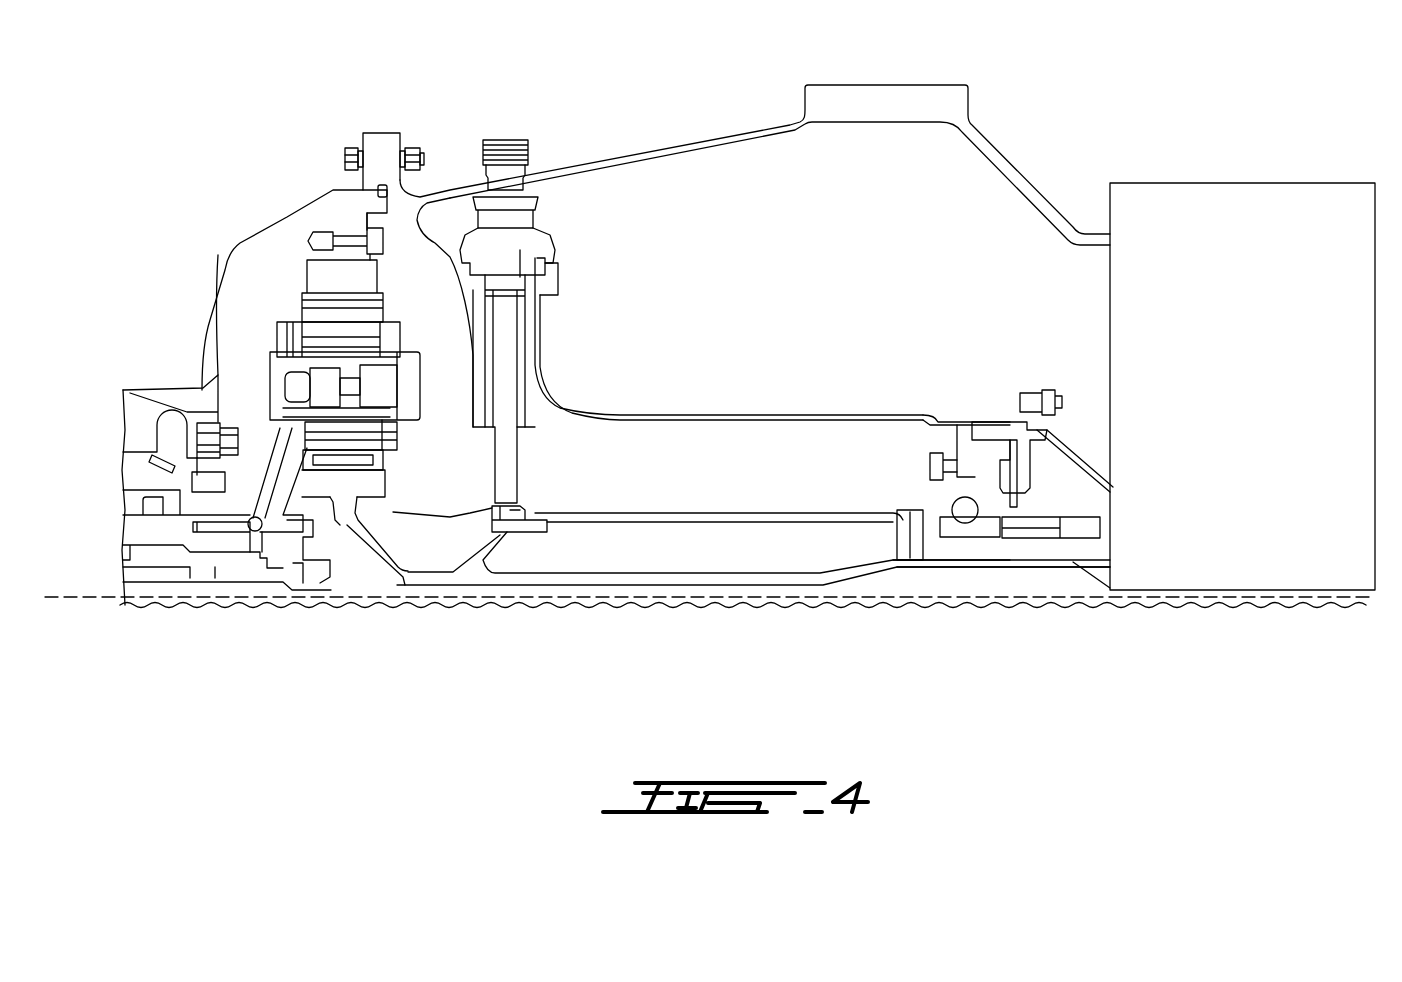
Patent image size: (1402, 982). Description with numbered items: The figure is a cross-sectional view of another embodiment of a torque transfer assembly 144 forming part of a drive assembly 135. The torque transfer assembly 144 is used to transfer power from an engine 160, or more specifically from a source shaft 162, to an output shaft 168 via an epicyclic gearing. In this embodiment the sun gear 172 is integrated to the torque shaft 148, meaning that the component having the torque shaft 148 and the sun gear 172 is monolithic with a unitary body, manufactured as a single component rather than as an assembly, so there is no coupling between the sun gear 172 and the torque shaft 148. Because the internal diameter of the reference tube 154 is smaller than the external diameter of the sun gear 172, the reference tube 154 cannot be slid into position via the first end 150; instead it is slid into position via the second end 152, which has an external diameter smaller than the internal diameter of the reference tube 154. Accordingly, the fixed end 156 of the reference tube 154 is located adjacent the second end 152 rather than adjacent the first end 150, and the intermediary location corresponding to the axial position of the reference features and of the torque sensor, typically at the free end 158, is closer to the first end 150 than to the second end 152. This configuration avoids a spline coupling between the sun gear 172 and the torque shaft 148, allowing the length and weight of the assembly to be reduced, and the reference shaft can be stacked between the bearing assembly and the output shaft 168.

The drive assembly 135 is at (737, 632).
The torque transfer assembly 144 is at (627, 492).
The torque shaft 148 is at (577, 580).
The first end 150 is at (407, 577).
The second end 152 is at (970, 540).
The reference tube 154 is at (733, 520).
The fixed end 156 is at (913, 510).
The free end 158 is at (452, 516).
The engine 160 is at (1243, 183).
The source shaft 162 is at (1077, 562).
The output shaft 168 is at (155, 527).
The sun gear 172 is at (353, 473).